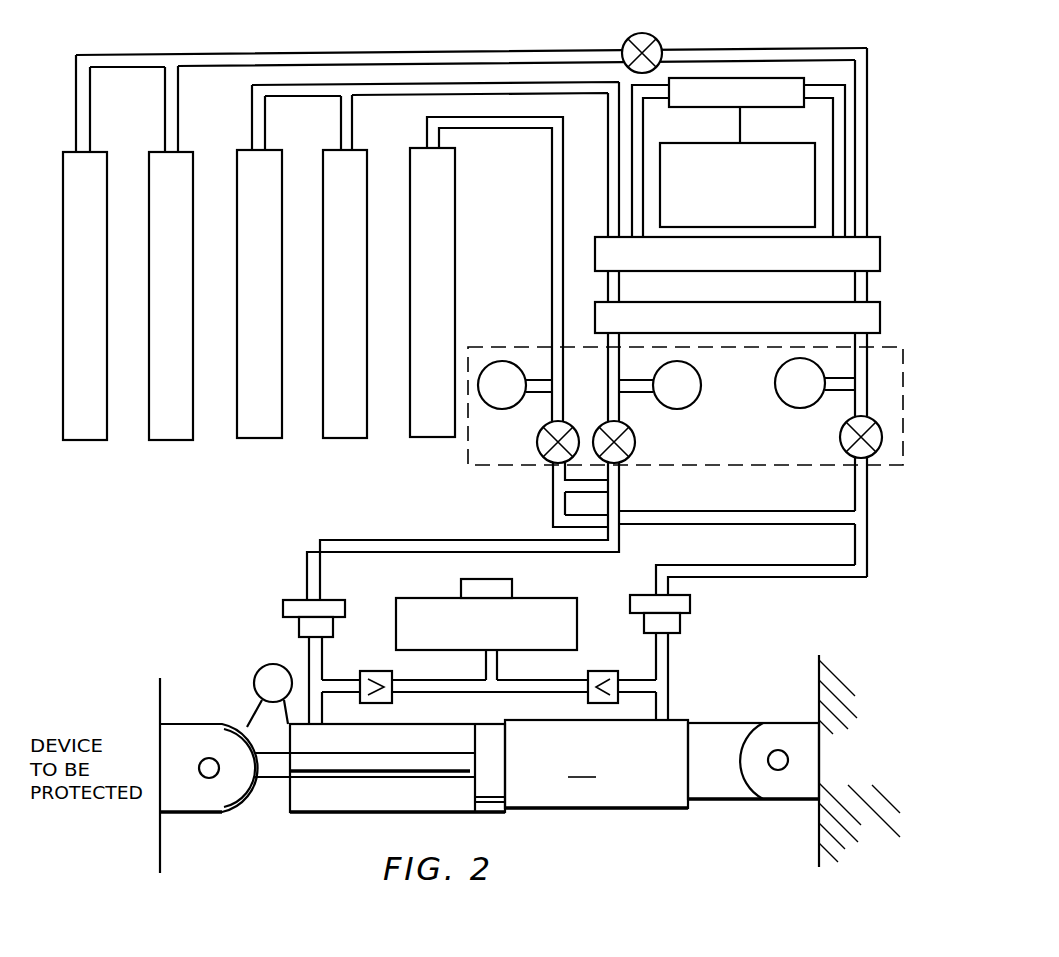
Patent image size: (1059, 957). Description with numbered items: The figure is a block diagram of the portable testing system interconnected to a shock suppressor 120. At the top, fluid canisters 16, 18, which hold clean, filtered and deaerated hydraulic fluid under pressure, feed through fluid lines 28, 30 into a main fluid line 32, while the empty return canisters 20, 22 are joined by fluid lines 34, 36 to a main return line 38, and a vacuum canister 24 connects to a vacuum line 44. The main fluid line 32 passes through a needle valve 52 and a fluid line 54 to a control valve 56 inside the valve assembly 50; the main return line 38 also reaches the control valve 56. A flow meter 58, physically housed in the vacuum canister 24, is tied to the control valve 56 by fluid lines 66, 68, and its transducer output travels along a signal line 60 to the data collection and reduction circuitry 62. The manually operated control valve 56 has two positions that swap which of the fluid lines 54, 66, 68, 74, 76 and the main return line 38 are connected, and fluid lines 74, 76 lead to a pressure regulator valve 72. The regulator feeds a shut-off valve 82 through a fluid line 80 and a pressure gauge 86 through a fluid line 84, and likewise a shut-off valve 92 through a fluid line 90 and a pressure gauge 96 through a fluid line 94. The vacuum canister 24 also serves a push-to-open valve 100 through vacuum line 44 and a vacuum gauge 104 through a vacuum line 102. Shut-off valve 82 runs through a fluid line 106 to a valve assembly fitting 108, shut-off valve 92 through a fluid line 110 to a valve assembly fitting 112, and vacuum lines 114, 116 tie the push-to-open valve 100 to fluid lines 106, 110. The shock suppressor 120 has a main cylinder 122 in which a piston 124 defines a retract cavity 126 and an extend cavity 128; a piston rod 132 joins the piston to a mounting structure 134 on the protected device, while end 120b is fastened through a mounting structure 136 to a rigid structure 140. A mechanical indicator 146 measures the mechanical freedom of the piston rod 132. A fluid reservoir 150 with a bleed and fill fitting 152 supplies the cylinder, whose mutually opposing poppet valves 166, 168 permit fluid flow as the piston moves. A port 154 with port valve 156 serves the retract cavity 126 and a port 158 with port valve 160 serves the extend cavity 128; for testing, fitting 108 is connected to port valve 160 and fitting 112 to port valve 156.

The fluid canister 16 is at (73, 269).
The fluid canister 18 is at (159, 269).
The return canister 20 is at (247, 269).
The return canister 22 is at (333, 269).
The vacuum canister 24 is at (420, 269).
The fluid line 28 is at (83, 117).
The fluid line 30 is at (172, 116).
The main fluid line 32 is at (270, 53).
The fluid line 34 is at (260, 116).
The fluid line 36 is at (345, 116).
The main return line 38 is at (613, 108).
The vacuum line 44 is at (555, 166).
The valve assembly 50 is at (892, 257).
The needle valve 52 is at (648, 41).
The fluid line 54 is at (864, 128).
The control valve 56 is at (607, 252).
The flow meter 58 is at (755, 108).
The signal line 60 is at (740, 127).
The data collection and reduction circuitry 62 is at (795, 153).
The fluid line 66 is at (640, 152).
The fluid line 68 is at (838, 92).
The pressure regulator valve 72 is at (878, 317).
The fluid line 74 is at (622, 288).
The fluid line 76 is at (855, 287).
The fluid line 80 is at (613, 372).
The shut-off valve 82 is at (640, 441).
The fluid line 84 is at (640, 385).
The pressure gauge 86 is at (687, 378).
The fluid line 90 is at (858, 363).
The shut-off valve 92 is at (880, 434).
The fluid line 94 is at (838, 383).
The pressure gauge 96 is at (795, 395).
The push-to-open valve 100 is at (575, 427).
The vacuum line 102 is at (540, 392).
The vacuum gauge 104 is at (503, 360).
The fluid line 106 is at (430, 543).
The valve assembly fitting 108 is at (283, 610).
The fluid line 110 is at (868, 550).
The valve assembly fitting 112 is at (645, 600).
The vacuum line 114 is at (587, 487).
The vacuum line 116 is at (752, 515).
The shock suppressor 120 is at (703, 699).
The end of shock suppressor 120b is at (723, 803).
The main cylinder 122 is at (593, 810).
The piston 124 is at (485, 788).
The retract cavity 126 is at (596, 764).
The extend cavity 128 is at (417, 797).
The piston rod 132 is at (342, 763).
The mounting structure 134 is at (208, 795).
The mounting structure 136 is at (802, 785).
The rigid structure 140 is at (840, 687).
The mechanical indicator 146 is at (265, 680).
The fluid reservoir 150 is at (428, 607).
The bleed and fill fitting 152 is at (503, 589).
The port 154 is at (680, 662).
The port valve 156 is at (680, 624).
The port 158 is at (320, 650).
The port valve 160 is at (299, 627).
The poppet valve 166 is at (603, 668).
The poppet valve 168 is at (395, 670).